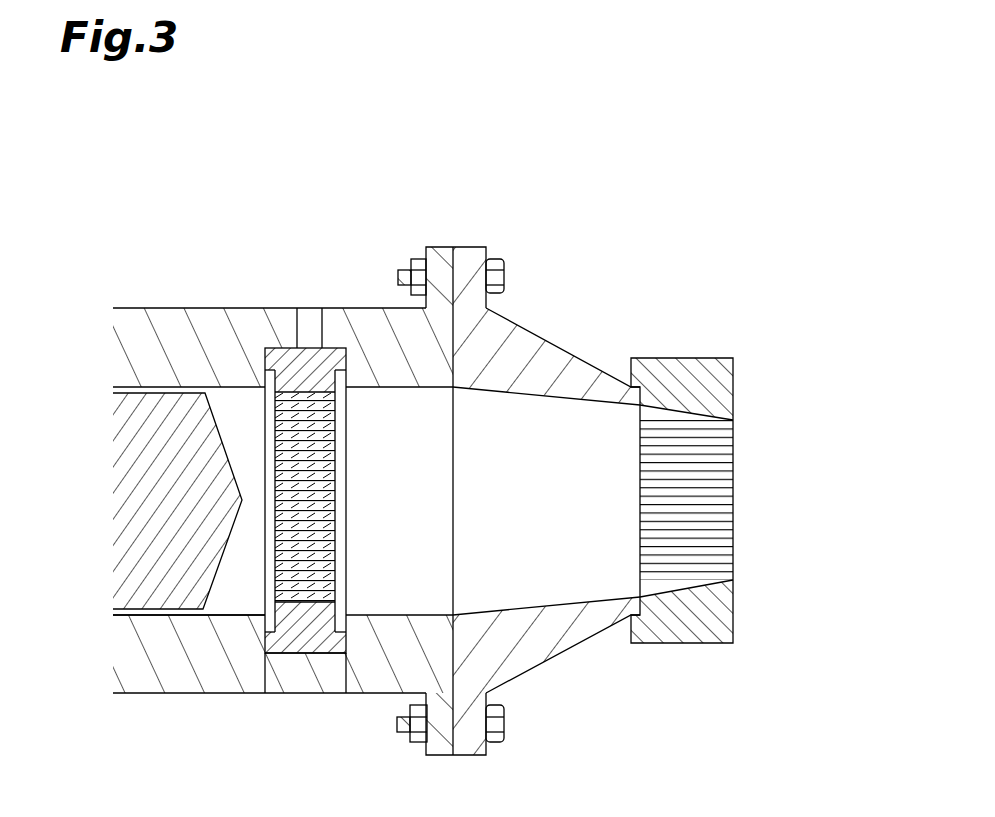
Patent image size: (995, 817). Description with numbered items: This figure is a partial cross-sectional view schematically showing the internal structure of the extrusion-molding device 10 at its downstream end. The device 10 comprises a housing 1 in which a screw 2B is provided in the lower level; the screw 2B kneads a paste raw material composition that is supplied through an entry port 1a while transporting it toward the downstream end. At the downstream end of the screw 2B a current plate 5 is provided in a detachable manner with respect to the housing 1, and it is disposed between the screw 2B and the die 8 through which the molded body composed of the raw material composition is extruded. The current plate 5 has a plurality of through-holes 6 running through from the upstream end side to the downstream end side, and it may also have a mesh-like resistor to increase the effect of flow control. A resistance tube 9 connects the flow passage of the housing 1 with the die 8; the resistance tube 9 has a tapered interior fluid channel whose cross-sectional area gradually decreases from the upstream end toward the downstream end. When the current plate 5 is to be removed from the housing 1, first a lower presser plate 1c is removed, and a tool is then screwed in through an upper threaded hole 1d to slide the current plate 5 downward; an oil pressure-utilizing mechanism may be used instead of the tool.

The housing 1 is at (234, 307).
The entry port 1a is at (240, 606).
The lower presser plate 1c is at (297, 692).
The upper threaded hole 1d is at (310, 323).
The screw 2B is at (137, 487).
The current plate 5 is at (368, 454).
The through-hole 6 is at (332, 407).
The die 8 is at (733, 450).
The resistance tube 9 is at (564, 630).
The extrusion-molding device 10 is at (602, 180).